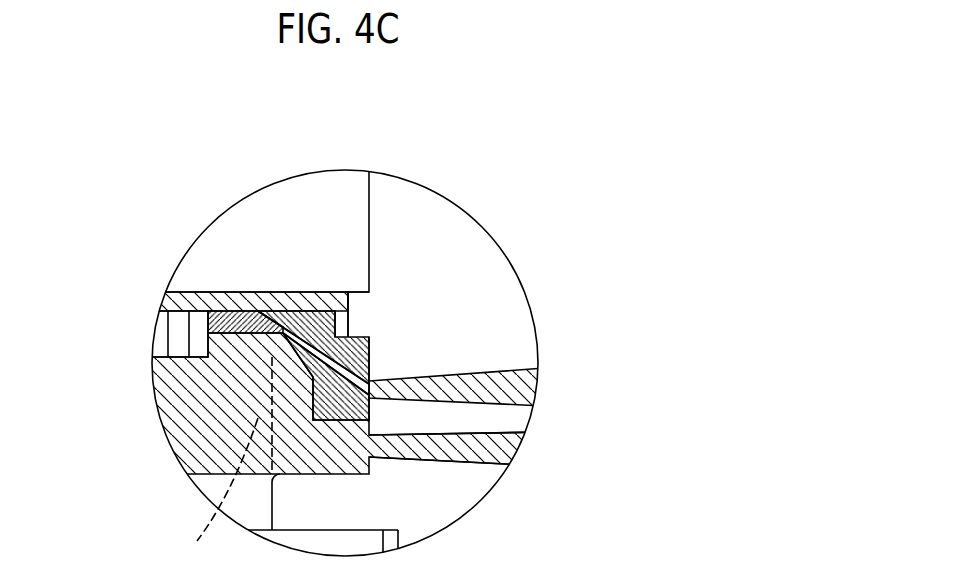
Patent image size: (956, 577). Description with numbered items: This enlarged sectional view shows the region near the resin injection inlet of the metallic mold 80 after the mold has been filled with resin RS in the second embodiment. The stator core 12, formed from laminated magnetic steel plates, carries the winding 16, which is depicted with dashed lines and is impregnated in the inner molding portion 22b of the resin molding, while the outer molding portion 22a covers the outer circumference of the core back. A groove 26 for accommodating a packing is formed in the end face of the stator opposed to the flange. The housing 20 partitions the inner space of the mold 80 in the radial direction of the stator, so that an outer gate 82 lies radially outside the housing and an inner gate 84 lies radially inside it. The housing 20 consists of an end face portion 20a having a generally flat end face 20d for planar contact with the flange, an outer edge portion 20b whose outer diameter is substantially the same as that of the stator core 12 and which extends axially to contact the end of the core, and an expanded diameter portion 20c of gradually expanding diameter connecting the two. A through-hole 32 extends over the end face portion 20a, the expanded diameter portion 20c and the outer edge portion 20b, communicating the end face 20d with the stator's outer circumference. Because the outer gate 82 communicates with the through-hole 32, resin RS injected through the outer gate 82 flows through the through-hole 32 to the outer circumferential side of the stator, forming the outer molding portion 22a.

The stator core 12 is at (163, 336).
The winding 16 is at (213, 461).
The housing 20 is at (372, 412).
The end face portion 20a is at (362, 346).
The outer edge portion 20b is at (212, 313).
The expanded diameter portion 20c is at (308, 311).
The end face 20d is at (371, 372).
The outer molding portion 22a is at (228, 300).
The inner molding portion 22b is at (192, 420).
The groove 26 is at (340, 312).
The through-hole 32 is at (369, 353).
The mold 80 is at (343, 186).
The outer gate 82 is at (372, 378).
The inner gate 84 is at (421, 463).
The resin RS is at (532, 393).